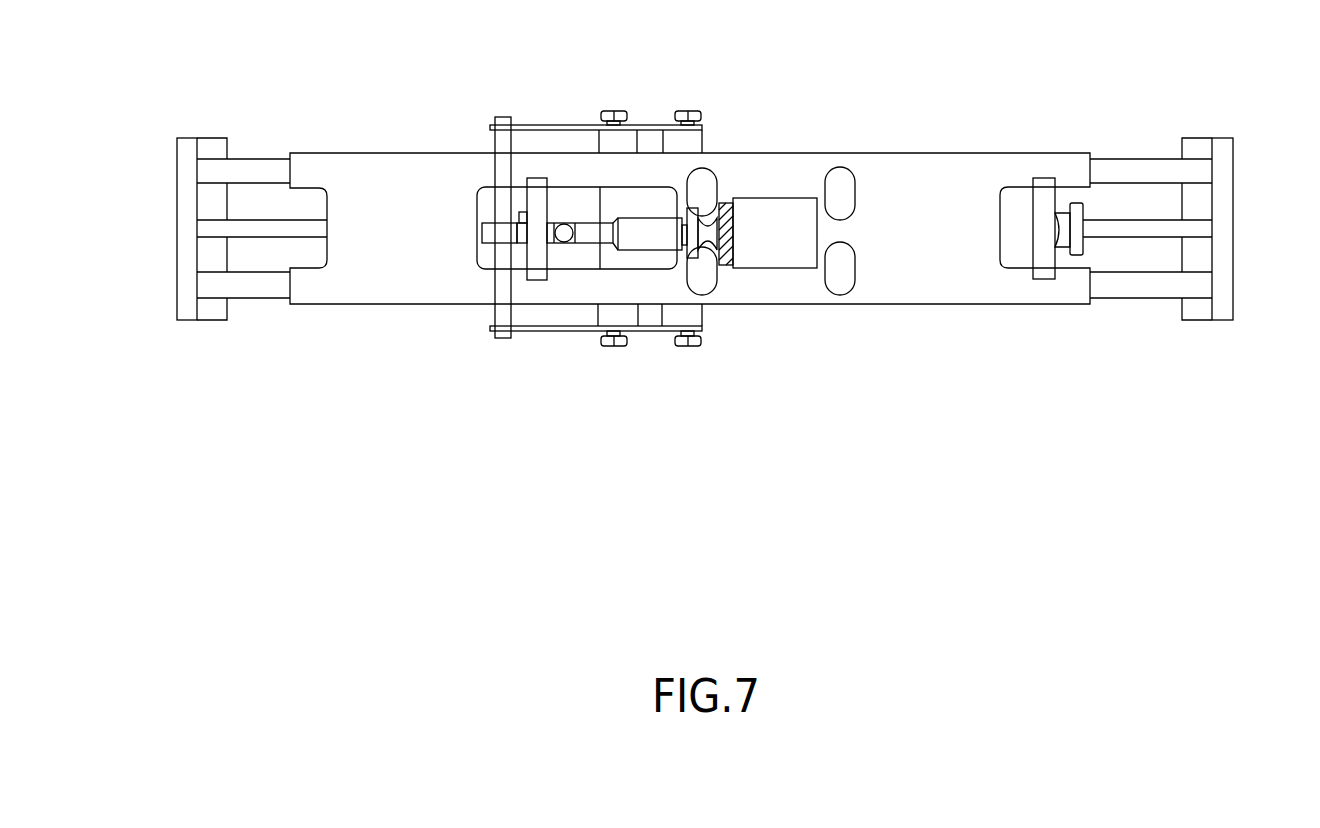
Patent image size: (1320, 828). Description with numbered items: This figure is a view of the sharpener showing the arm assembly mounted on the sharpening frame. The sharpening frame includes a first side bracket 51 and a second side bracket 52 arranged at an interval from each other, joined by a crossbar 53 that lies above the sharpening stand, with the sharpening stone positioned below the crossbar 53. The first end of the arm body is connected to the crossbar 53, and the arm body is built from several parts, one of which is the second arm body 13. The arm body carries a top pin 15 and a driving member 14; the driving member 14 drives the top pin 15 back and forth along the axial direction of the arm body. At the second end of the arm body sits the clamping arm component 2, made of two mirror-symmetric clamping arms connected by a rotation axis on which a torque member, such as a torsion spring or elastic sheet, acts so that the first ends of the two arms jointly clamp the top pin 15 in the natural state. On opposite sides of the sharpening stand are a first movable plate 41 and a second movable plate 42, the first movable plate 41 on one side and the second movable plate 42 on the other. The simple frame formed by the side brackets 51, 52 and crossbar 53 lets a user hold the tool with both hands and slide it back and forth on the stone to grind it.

The clamping arm component 2 is at (770, 228).
The second arm body 13 is at (642, 228).
The driving member 14 is at (697, 208).
The top pin 15 is at (729, 228).
The first movable plate 41 is at (1215, 215).
The second movable plate 42 is at (185, 227).
The first side bracket 51 is at (567, 330).
The second side bracket 52 is at (550, 126).
The crossbar 53 is at (503, 167).